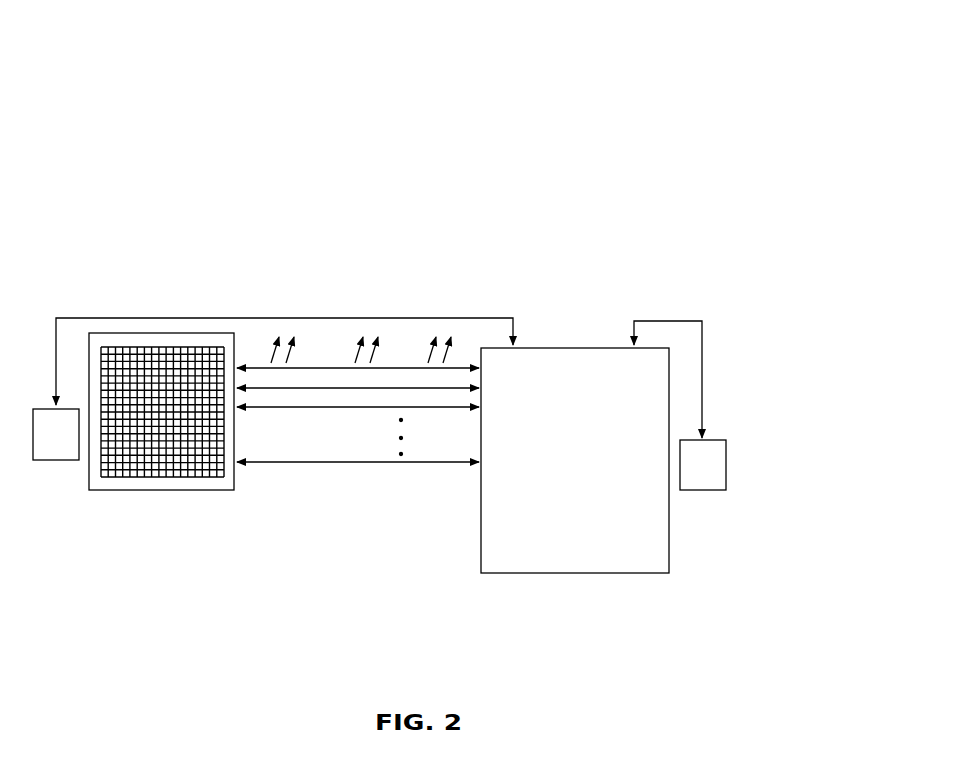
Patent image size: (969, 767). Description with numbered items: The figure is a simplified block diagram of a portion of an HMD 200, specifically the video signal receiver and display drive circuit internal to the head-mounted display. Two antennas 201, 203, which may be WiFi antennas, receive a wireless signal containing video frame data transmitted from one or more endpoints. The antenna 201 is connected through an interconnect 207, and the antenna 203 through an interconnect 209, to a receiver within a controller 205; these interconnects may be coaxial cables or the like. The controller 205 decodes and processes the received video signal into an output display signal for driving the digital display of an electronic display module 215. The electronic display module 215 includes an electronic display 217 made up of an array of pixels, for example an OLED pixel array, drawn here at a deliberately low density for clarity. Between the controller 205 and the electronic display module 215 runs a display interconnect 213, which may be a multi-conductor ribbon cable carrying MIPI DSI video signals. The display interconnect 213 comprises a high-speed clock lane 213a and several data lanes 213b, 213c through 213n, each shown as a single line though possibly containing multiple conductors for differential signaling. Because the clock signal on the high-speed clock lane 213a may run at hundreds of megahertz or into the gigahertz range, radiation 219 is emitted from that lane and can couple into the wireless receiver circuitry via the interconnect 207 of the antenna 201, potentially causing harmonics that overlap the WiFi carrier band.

The HMD 200 is at (531, 96).
The antenna 201 is at (56, 460).
The antenna 203 is at (702, 490).
The controller 205 is at (598, 467).
The interconnect 207 is at (95, 318).
The interconnect 209 is at (678, 320).
The display interconnect 213 is at (319, 340).
The high-speed clock lane 213a is at (250, 368).
The data lane 213b is at (294, 388).
The data lane 213c is at (344, 407).
The data lane 213n is at (437, 462).
The electronic display module 215 is at (212, 334).
The electronic display 217 is at (155, 477).
The radiation 219 is at (392, 341).